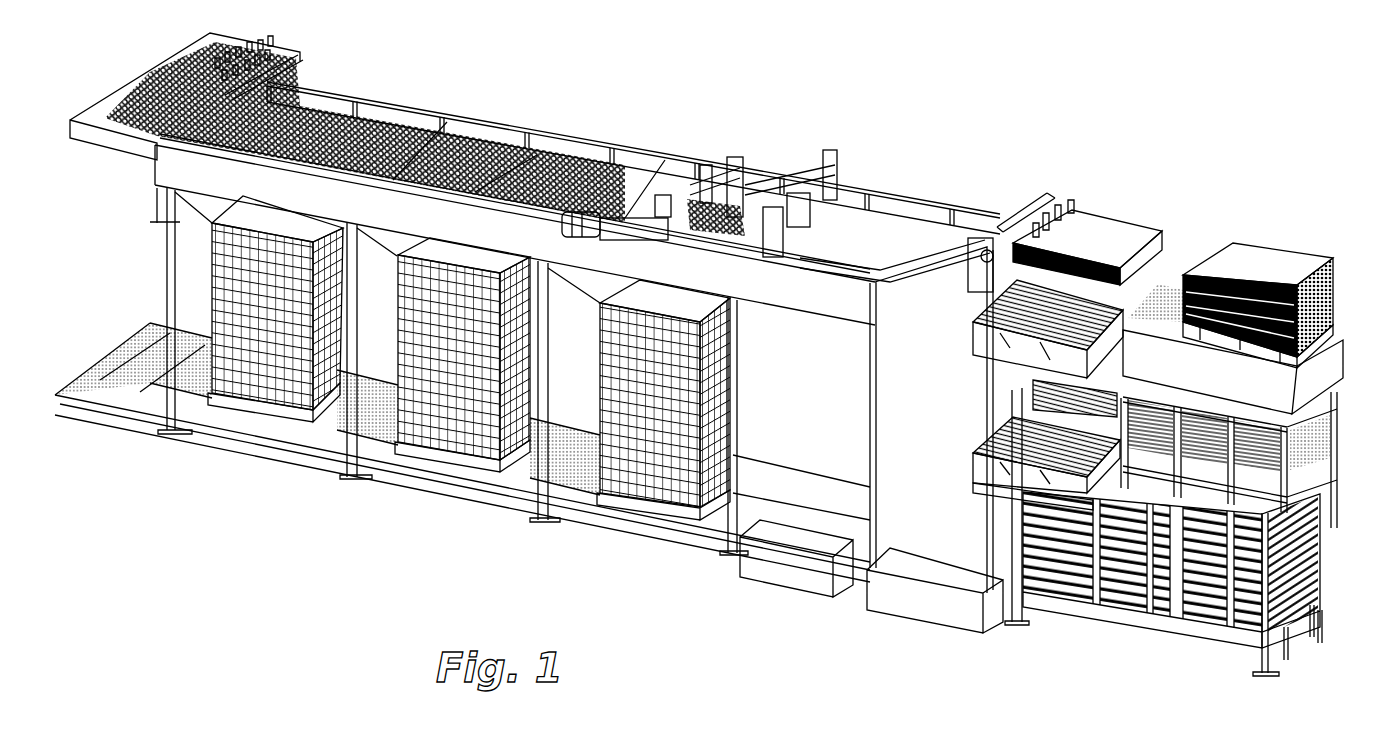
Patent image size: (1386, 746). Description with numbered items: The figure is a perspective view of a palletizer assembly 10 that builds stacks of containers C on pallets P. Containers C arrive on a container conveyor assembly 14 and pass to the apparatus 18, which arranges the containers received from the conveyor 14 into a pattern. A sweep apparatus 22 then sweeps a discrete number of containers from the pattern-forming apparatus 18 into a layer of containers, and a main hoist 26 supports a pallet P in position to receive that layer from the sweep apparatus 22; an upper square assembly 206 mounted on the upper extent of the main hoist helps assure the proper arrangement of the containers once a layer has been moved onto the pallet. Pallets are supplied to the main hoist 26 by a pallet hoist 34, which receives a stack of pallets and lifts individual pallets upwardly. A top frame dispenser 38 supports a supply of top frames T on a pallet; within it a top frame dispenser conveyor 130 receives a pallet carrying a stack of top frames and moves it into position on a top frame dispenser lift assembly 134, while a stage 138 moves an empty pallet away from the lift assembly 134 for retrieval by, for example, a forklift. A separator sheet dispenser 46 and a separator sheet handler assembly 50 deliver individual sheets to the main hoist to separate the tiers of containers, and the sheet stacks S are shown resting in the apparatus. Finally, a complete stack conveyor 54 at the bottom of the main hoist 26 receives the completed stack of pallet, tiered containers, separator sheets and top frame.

The palletizer assembly 10 is at (1003, 155).
The container conveyor assembly 14 is at (133, 146).
The apparatus for arranging containers into a pattern 18 is at (629, 138).
The sweep apparatus 22 is at (762, 163).
The main hoist 26 is at (907, 187).
The pallet hoist 34 is at (950, 632).
The top frame dispenser 38 is at (1333, 460).
The separator sheet dispenser 46 is at (1335, 324).
The separator sheet handler assembly 50 is at (1072, 190).
The complete stack conveyor 54 is at (647, 523).
The top frame dispenser conveyor 130 is at (1162, 417).
The top frame dispenser lift assembly 134 is at (1020, 394).
The stage 138 is at (993, 483).
The upper square assembly 206 is at (898, 227).
The containers C is at (475, 145).
The pallet P is at (277, 418).
The stack S is at (418, 414).
The top frames T is at (212, 223).